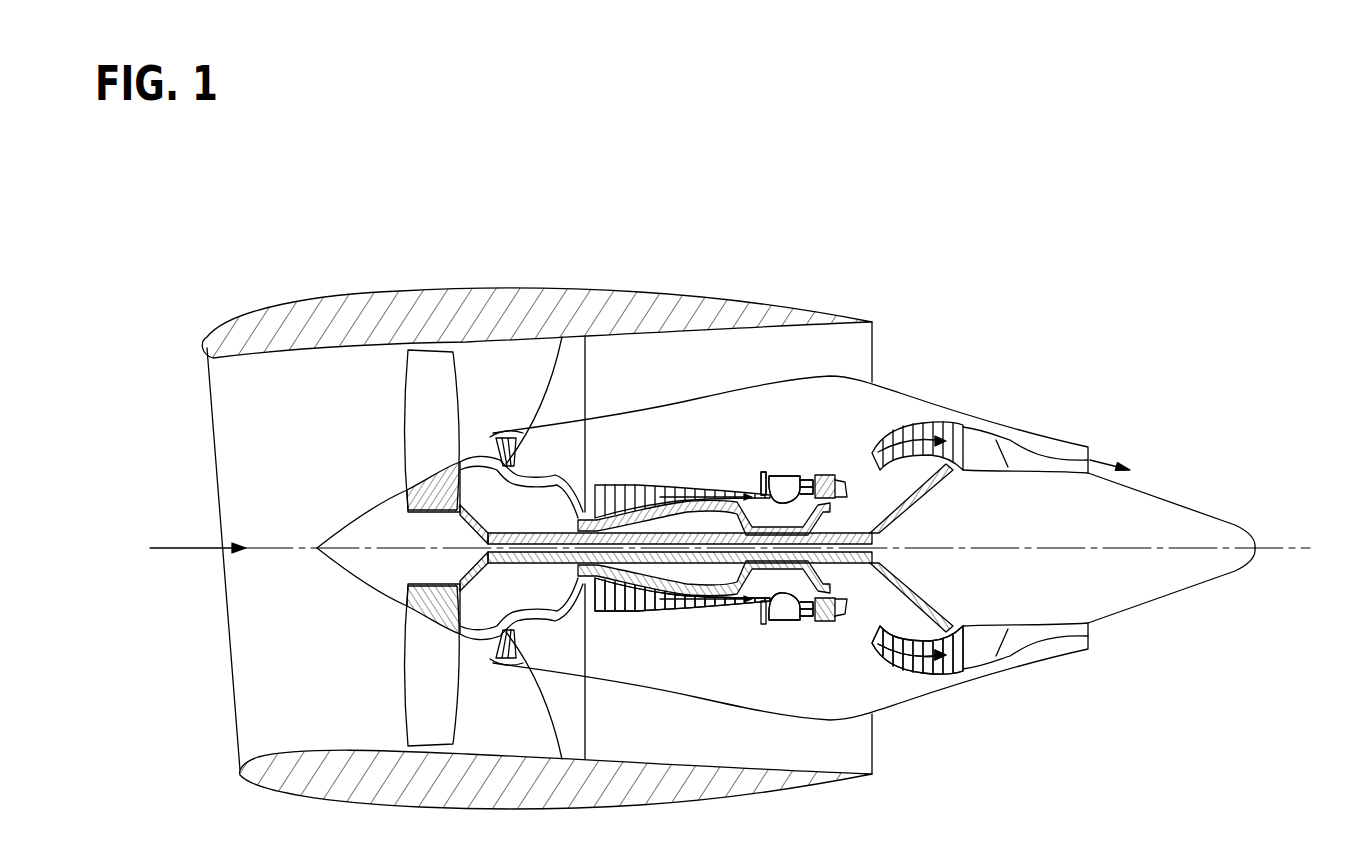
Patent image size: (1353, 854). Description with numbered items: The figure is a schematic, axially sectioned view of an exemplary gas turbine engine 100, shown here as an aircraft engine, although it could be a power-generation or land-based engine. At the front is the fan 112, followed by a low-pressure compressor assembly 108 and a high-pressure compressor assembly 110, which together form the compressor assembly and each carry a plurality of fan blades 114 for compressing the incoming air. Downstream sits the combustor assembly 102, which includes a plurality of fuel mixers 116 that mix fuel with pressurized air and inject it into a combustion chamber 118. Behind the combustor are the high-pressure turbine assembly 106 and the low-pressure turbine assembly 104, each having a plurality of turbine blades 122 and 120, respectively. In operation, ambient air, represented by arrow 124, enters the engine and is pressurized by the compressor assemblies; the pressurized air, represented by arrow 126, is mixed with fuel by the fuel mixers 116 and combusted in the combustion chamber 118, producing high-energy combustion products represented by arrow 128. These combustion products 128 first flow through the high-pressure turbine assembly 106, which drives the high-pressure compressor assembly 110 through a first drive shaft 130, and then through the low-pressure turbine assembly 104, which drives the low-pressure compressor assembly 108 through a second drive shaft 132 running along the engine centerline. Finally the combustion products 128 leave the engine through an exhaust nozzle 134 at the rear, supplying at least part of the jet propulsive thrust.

The gas turbine engine 100 is at (1045, 341).
The combustor assembly 102 is at (768, 460).
The low-pressure turbine assembly 104 is at (916, 680).
The high-pressure turbine assembly 106 is at (822, 630).
The low-pressure compressor assembly 108 is at (513, 426).
The high-pressure compressor assembly 110 is at (684, 630).
The fan 112 is at (420, 432).
The fan blades 114 is at (627, 492).
The fuel mixers 116 is at (762, 476).
The combustion chamber 118 is at (787, 483).
The turbine blades 120 is at (909, 450).
The turbine blades 122 is at (822, 475).
The ambient air 124 is at (186, 540).
The pressurized air 126 is at (688, 492).
The combustion products 128 is at (838, 490).
The first drive shaft 130 is at (713, 590).
The second drive shaft 132 is at (557, 532).
The exhaust nozzle 134 is at (1090, 448).